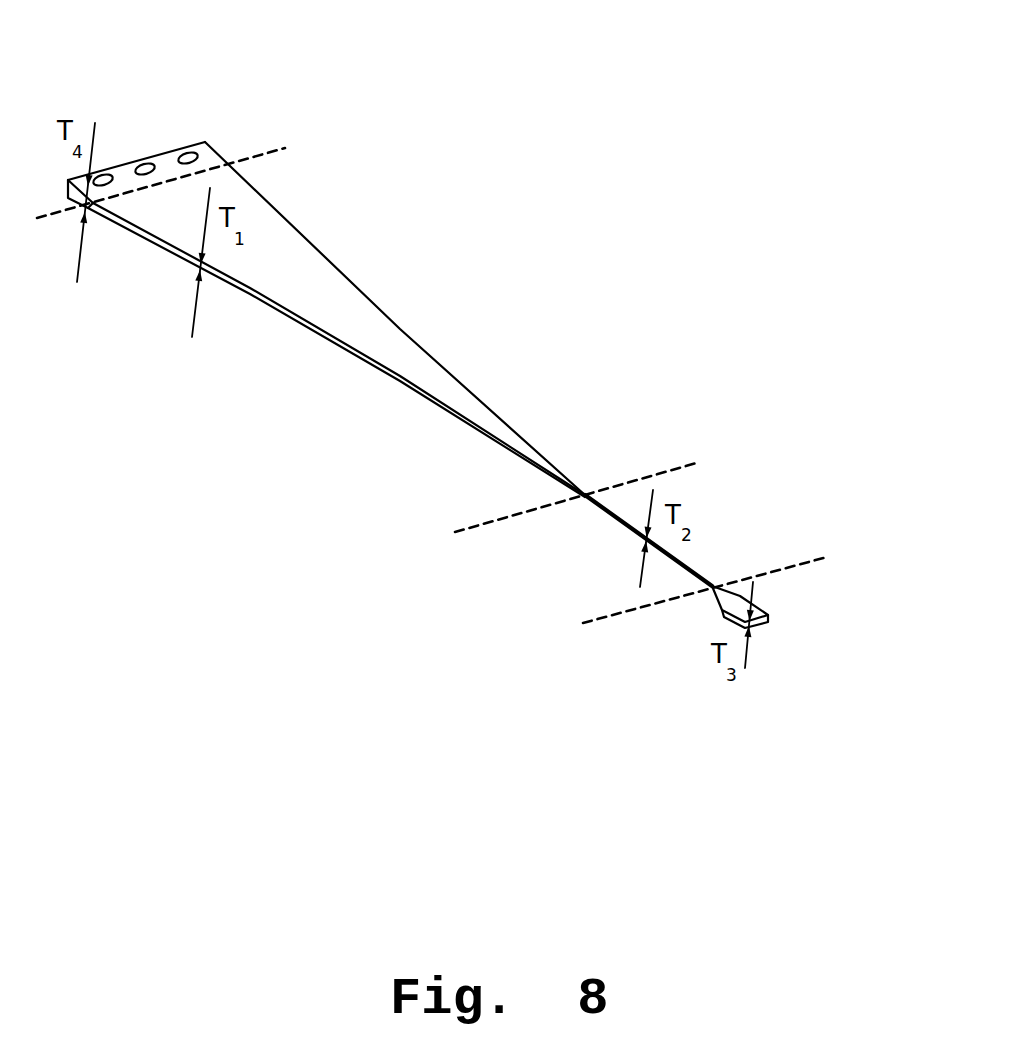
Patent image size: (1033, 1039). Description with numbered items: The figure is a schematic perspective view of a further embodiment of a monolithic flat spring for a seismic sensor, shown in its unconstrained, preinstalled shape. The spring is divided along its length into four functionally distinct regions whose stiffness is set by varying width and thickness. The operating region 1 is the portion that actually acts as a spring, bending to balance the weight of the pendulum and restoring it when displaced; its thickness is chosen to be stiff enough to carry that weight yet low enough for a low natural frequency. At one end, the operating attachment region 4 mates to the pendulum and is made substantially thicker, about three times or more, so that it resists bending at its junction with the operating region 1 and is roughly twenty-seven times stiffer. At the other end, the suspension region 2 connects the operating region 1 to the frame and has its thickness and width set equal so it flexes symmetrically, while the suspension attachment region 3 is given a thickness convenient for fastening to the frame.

The operating region 1 is at (424, 302).
The suspension region 2 is at (738, 548).
The suspension attachment region 3 is at (802, 603).
The operating attachment region 4 is at (251, 137).